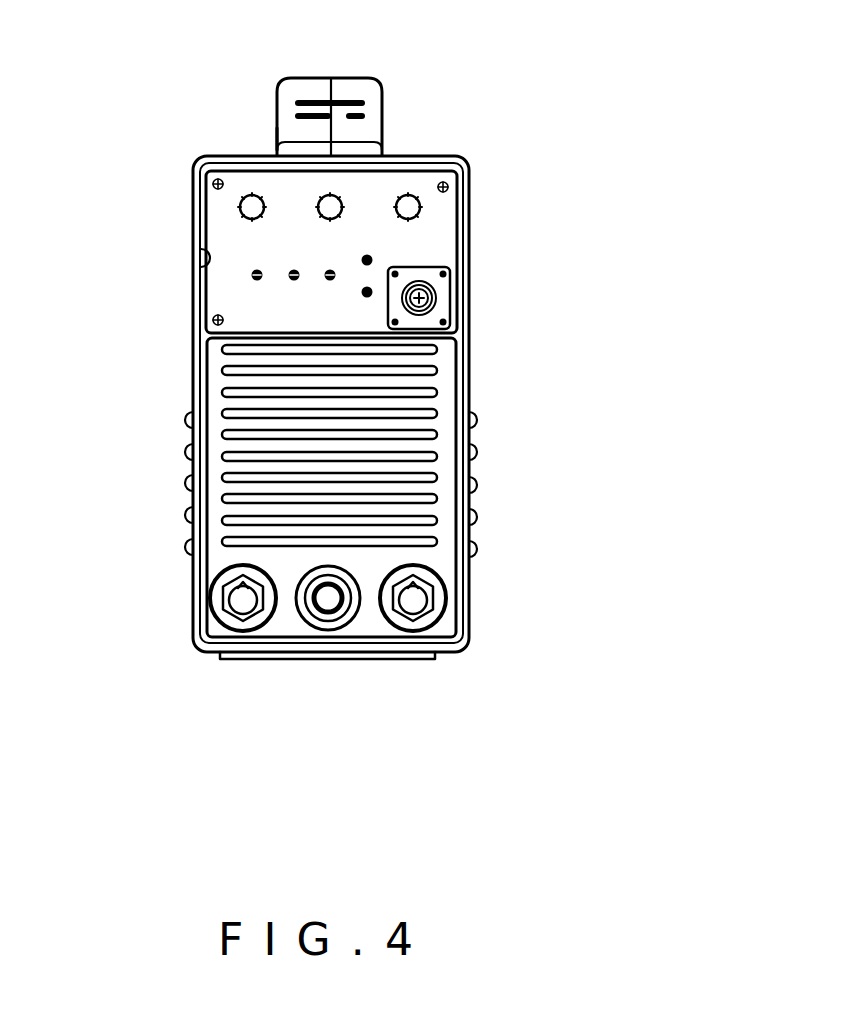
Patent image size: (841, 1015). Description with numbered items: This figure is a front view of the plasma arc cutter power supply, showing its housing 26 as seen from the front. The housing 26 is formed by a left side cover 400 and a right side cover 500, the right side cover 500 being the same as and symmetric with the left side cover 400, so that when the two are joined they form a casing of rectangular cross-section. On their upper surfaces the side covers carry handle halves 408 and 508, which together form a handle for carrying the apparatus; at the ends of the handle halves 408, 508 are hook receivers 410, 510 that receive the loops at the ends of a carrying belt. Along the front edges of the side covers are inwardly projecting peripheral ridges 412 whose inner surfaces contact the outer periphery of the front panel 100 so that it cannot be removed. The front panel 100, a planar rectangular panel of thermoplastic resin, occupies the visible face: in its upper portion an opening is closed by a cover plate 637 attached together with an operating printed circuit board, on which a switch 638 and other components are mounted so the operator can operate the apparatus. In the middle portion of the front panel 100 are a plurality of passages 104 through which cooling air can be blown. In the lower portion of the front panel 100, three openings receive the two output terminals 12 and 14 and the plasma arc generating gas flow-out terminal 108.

The housing 26 is at (497, 54).
The left side cover 400 is at (190, 202).
The right side cover 500 is at (474, 192).
The handle half 508 is at (363, 88).
The hook receiver 410 is at (312, 110).
The hook receiver 510 is at (353, 117).
The handle half 408 is at (288, 127).
The cover plate 637 is at (428, 243).
The switch 638 is at (250, 212).
The peripheral ridge 412 is at (207, 265).
The front panel 100 is at (438, 567).
The passages 104 is at (225, 480).
The output terminal 12 is at (243, 606).
The plasma arc generating gas flow-out terminal 108 is at (328, 608).
The output terminal 14 is at (414, 608).